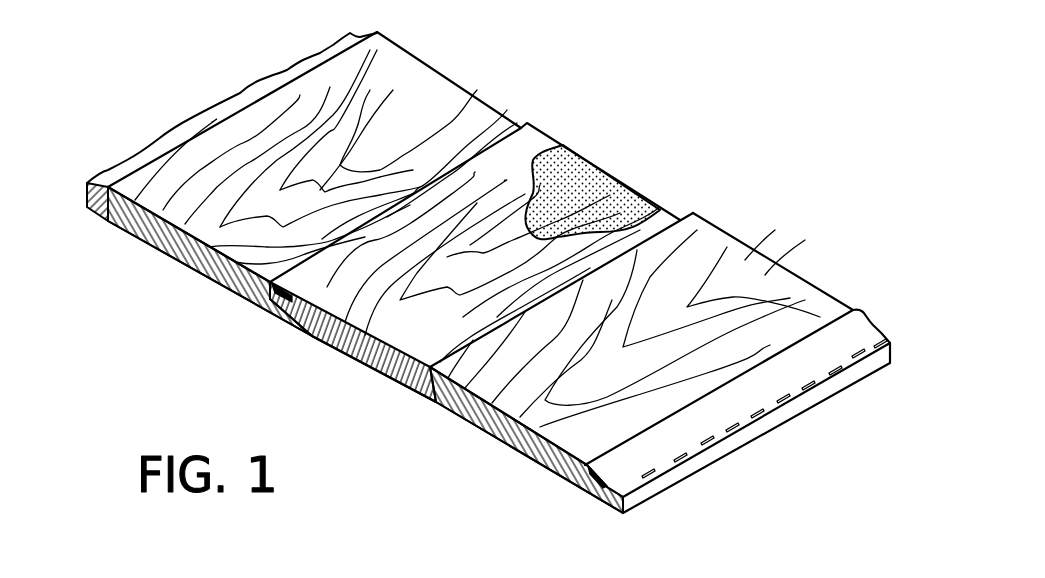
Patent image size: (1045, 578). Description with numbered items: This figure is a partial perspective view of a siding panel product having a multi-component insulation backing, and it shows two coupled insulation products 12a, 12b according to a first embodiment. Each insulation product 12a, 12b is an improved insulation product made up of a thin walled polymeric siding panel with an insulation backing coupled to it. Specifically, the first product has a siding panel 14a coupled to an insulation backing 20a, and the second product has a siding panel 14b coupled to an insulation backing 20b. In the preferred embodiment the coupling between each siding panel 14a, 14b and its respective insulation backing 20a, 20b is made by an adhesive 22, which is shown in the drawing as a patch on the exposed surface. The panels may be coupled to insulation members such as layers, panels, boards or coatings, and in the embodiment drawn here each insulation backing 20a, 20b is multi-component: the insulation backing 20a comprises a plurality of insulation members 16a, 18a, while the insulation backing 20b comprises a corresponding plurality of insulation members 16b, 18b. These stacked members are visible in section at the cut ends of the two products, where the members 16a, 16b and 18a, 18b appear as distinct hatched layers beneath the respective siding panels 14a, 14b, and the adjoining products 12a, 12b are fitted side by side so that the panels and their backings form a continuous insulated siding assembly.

The insulation product 12a is at (785, 279).
The insulation product 12b is at (472, 106).
The siding panel 14a is at (557, 445).
The siding panel 14b is at (183, 212).
The insulation member 16a is at (497, 440).
The insulation member 16b is at (207, 273).
The insulation member 18a is at (330, 347).
The insulation member 18b is at (92, 215).
The insulation backing 20a is at (442, 413).
The insulation backing 20b is at (142, 237).
The adhesive 22 is at (603, 183).